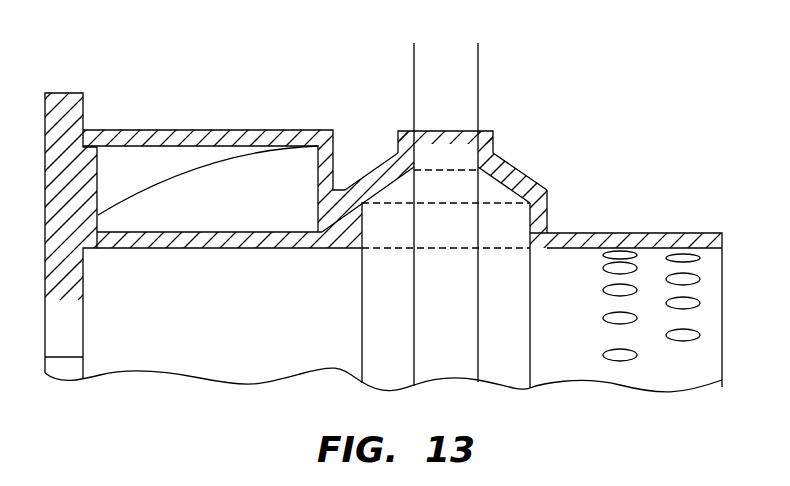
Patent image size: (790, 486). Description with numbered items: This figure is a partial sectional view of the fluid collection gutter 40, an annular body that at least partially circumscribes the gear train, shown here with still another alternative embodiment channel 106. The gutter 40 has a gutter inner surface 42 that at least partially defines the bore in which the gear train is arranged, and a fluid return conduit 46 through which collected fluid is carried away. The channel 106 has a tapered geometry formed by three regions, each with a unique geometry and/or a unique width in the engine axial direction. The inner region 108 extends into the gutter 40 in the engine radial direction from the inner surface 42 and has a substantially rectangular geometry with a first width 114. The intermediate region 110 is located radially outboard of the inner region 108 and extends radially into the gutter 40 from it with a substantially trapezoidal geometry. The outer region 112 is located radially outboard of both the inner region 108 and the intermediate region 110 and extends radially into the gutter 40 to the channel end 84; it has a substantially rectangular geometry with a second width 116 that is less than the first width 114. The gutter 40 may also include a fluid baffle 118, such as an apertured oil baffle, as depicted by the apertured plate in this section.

The fluid collection gutter 40 is at (395, 150).
The gutter inner surface 42 is at (180, 250).
The fluid return conduit 46 is at (273, 172).
The channel end 84 is at (460, 131).
The channel 106 is at (385, 255).
The inner region 108 is at (513, 223).
The intermediate region 110 is at (510, 170).
The outer region 112 is at (478, 155).
The first width 114 is at (530, 352).
The second width 116 is at (358, 53).
The fluid baffle 118 is at (706, 233).